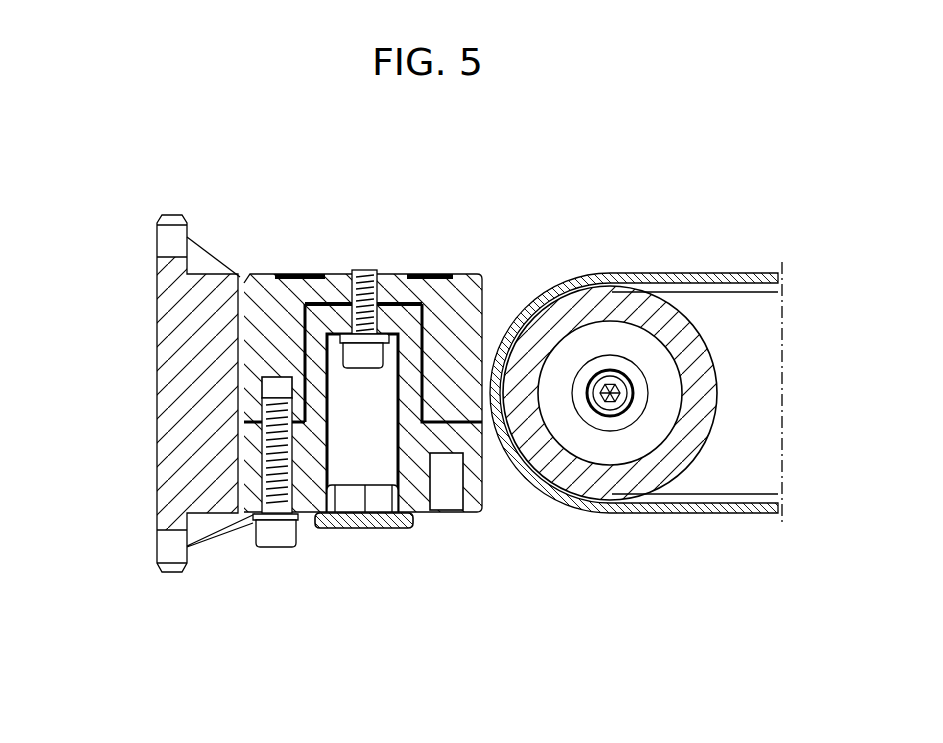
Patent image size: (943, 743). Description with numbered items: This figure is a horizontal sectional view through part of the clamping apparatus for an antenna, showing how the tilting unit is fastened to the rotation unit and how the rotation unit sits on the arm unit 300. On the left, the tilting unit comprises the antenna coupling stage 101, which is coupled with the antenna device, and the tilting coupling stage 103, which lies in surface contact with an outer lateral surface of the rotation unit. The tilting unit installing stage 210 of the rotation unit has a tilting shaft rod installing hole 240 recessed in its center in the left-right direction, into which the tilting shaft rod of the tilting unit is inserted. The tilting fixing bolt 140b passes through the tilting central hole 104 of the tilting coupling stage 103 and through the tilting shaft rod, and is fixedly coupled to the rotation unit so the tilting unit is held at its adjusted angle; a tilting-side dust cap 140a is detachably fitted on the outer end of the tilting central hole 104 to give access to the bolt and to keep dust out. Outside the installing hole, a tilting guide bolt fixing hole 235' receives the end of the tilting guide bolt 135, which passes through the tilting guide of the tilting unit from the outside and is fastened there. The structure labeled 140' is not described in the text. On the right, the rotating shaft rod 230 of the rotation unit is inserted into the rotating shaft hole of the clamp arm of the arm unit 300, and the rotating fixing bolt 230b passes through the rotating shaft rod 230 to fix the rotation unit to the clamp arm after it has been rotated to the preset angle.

The antenna coupling stage 101 is at (172, 330).
The tilting coupling stage 103 is at (421, 500).
The tilting central hole 104 is at (382, 457).
The tilting guide bolt 135 is at (274, 540).
The tension adjusting part 140' is at (358, 235).
The tilting-side dust cap 140a is at (349, 526).
The tilting fixing bolt 140b is at (367, 276).
The tilting unit installing stage 210 is at (275, 283).
The rotating shaft rod 230 is at (596, 482).
The rotating fixing bolt 230b is at (616, 378).
The tilting guide bolt fixing hole 235' is at (183, 378).
The tilting shaft rod installing hole 240 is at (412, 322).
The arm unit 300 is at (695, 514).